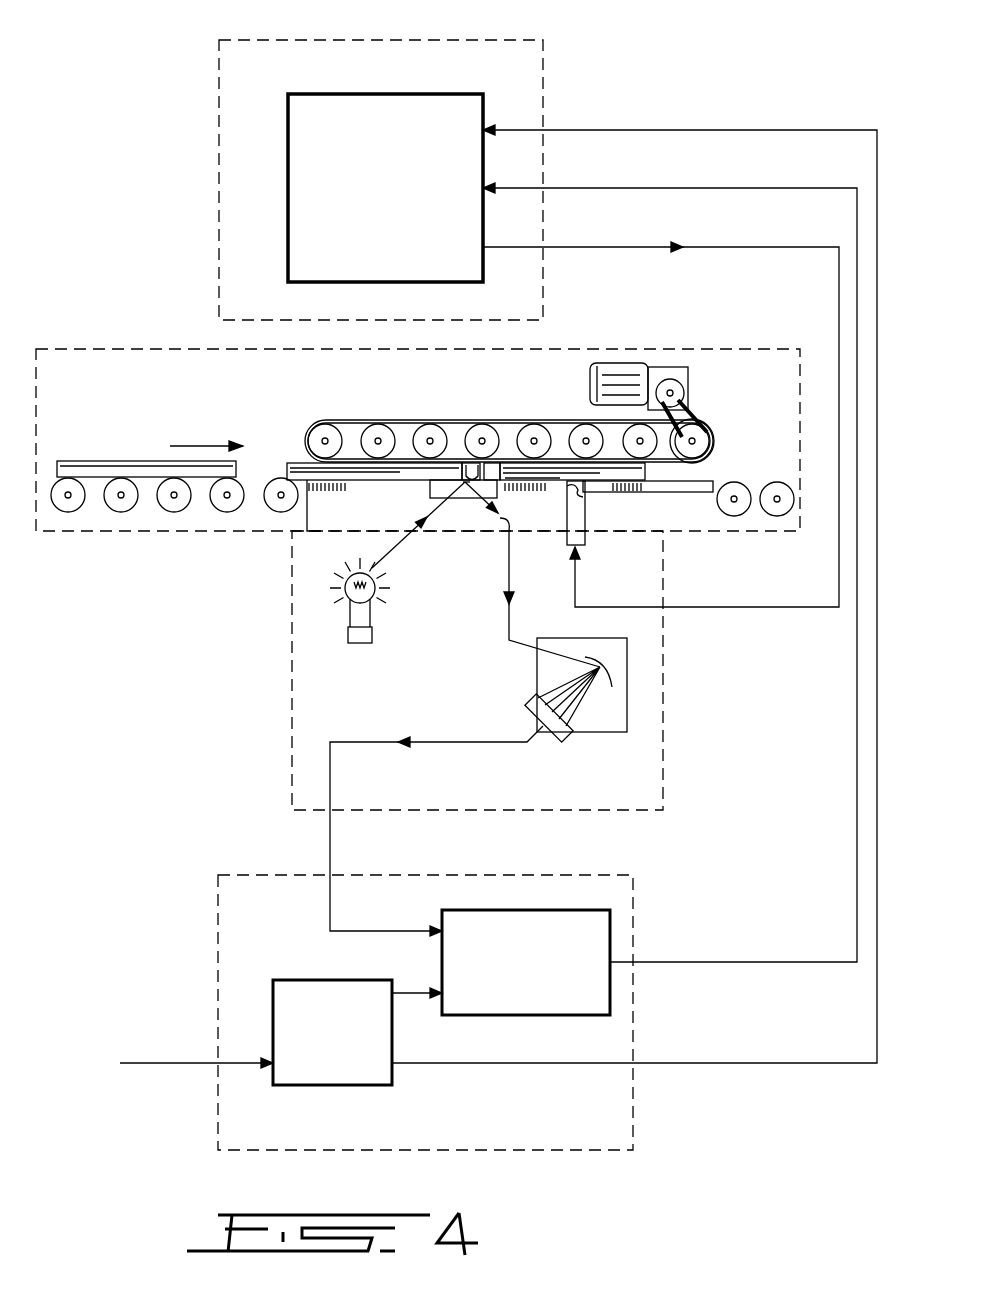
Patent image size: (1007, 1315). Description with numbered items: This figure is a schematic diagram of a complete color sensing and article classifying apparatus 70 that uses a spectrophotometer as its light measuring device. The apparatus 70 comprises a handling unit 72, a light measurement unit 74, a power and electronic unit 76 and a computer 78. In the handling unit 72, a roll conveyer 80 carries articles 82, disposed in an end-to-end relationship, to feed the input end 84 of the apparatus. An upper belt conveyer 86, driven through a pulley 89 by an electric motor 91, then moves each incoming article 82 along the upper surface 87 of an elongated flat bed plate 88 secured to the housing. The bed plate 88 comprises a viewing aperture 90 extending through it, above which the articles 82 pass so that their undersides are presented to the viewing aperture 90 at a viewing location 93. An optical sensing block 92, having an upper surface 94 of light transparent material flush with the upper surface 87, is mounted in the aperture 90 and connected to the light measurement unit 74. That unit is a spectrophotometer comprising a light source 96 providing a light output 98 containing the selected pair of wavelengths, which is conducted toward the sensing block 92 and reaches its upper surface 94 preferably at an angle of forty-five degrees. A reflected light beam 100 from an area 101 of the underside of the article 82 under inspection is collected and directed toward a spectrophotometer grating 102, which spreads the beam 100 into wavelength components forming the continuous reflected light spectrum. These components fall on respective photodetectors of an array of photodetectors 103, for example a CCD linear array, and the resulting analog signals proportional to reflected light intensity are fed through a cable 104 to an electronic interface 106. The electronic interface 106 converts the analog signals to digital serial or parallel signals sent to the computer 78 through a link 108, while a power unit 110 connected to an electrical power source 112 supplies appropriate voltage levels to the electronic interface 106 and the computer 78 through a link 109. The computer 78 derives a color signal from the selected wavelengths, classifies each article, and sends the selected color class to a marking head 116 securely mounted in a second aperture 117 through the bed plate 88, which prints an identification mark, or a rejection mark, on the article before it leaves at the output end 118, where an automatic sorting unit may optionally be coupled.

The apparatus 70 is at (175, 285).
The handling unit 72 is at (740, 374).
The light measurement unit 74 is at (298, 702).
The power and electronic unit 76 is at (240, 928).
The computer 78 is at (507, 63).
The roll conveyer 80 is at (145, 508).
The articles 82 is at (130, 463).
The input end 84 is at (302, 455).
The upper belt conveyer 86 is at (447, 421).
The upper surface 87 is at (512, 462).
The bed plate 88 is at (318, 490).
The pulley 89 is at (698, 410).
The viewing aperture 90 is at (488, 478).
The electric motor 91 is at (665, 364).
The optical sensing block 92 is at (463, 492).
The viewing location 93 is at (460, 464).
The upper surface 94 is at (471, 489).
The light source 96 is at (350, 618).
The light output 98 is at (397, 553).
The reflected light beam 100 is at (513, 528).
The area 101 is at (463, 484).
The spectrophotometer grating 102 is at (617, 657).
The array of photodetectors 103 is at (560, 733).
The cable 104 is at (332, 849).
The electronic interface 106 is at (593, 908).
The link 108 is at (763, 956).
The link 109 is at (747, 1068).
The power unit 110 is at (368, 1087).
The electrical power source 112 is at (148, 1068).
The marking head 116 is at (586, 540).
The second aperture 117 is at (583, 497).
The output end 118 is at (703, 473).